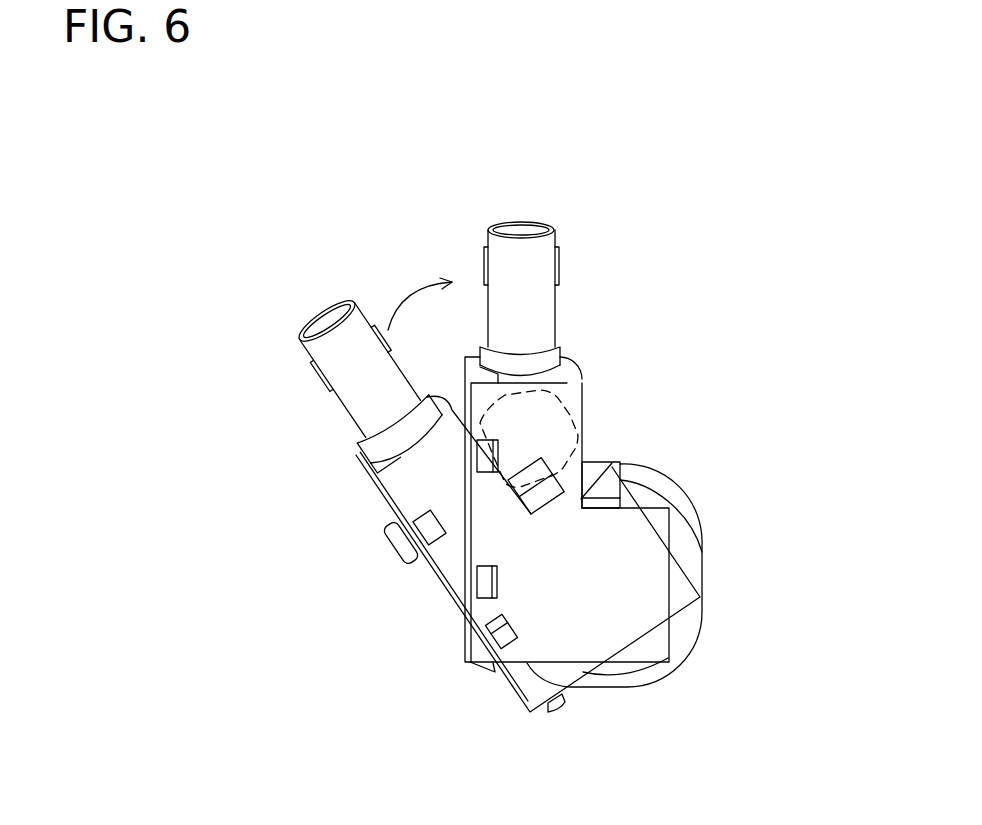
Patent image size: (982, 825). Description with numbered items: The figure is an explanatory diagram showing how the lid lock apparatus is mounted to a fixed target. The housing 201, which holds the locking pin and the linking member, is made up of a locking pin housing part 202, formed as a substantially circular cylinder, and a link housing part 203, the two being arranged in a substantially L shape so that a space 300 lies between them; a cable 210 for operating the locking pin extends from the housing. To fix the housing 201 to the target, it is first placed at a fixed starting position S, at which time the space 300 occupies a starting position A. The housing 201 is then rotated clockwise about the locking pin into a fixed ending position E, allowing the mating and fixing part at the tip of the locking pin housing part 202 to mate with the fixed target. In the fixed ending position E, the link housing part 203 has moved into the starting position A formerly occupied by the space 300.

The fixed ending position E is at (518, 247).
The fixed starting position S is at (332, 347).
The cable 210 is at (537, 308).
The starting position A is at (558, 407).
The link housing part 203 is at (583, 412).
The space 300 is at (560, 430).
The housing 201 is at (718, 522).
The locking pin housing part 202 is at (602, 620).